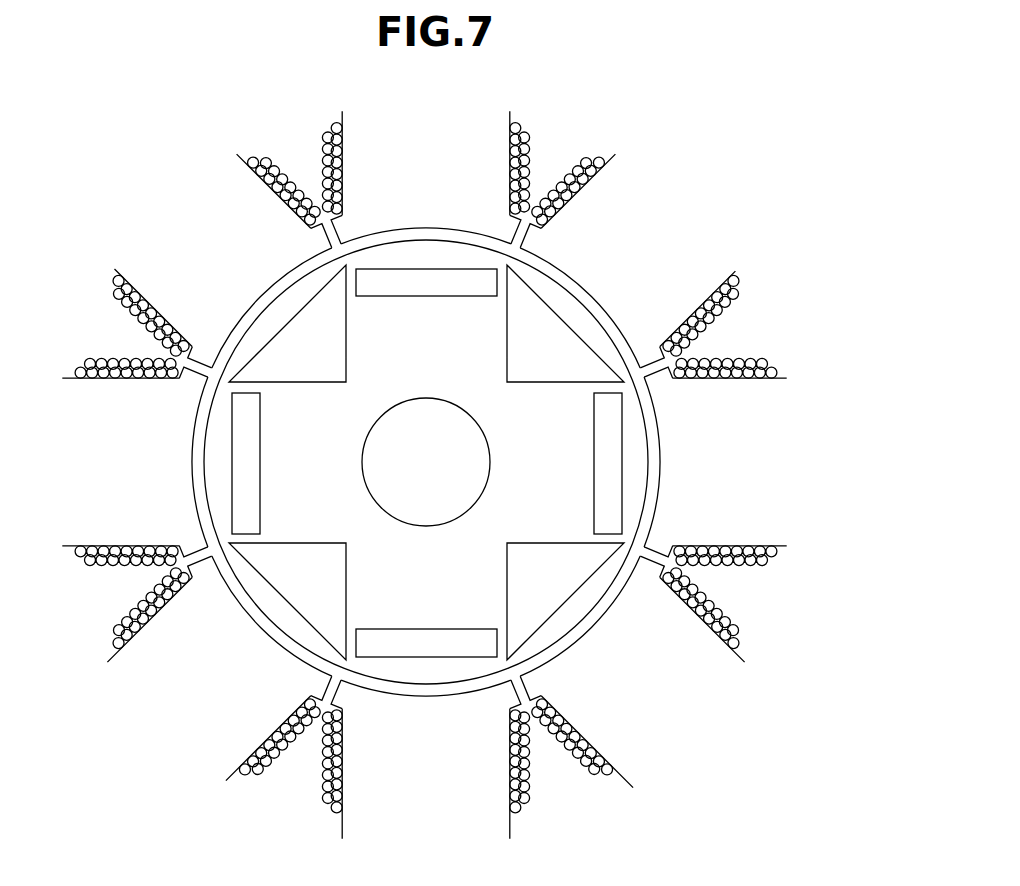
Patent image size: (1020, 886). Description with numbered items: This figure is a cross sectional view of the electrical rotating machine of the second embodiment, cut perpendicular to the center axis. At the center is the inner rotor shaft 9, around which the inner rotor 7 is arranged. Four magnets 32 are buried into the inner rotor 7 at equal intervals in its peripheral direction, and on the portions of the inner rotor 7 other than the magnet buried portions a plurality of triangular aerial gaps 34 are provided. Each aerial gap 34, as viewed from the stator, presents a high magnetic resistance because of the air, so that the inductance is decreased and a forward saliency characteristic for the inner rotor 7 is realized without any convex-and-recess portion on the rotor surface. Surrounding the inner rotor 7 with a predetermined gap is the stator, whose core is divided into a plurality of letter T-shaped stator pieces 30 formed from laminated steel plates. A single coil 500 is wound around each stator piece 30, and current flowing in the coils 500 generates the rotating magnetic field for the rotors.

The inner rotor 7 is at (550, 517).
The inner rotor shaft 9 is at (467, 467).
The stator piece 30 is at (417, 180).
The magnet 32 is at (440, 272).
The triangular aerial gap 34 is at (540, 332).
The coil 500 is at (293, 172).